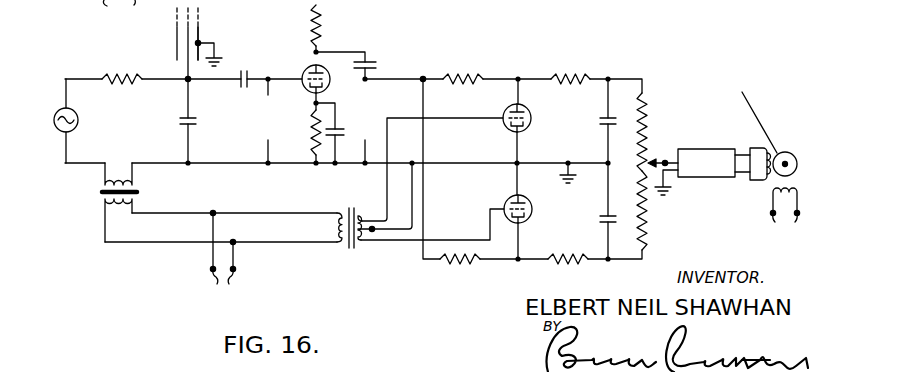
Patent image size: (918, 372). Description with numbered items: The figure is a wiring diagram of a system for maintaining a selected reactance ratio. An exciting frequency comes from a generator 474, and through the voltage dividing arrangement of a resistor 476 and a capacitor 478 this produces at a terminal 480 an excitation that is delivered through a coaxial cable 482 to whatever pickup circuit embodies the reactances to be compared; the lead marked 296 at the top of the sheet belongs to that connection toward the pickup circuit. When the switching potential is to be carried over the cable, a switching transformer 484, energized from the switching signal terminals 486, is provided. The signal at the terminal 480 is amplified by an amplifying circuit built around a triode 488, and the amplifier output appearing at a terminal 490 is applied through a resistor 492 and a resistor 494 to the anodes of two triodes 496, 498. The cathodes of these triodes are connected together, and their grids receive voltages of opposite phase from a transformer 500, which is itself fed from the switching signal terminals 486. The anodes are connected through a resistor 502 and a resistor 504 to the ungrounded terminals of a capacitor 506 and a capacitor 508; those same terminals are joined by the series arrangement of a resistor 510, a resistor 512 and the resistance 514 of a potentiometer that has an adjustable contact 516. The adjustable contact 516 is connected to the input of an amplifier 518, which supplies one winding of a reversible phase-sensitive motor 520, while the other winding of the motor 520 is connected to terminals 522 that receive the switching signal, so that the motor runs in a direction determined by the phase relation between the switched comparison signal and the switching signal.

The connection to preceding circuit 296 is at (124, 13).
The generator 474 is at (57, 129).
The resistor 476 is at (128, 72).
The capacitor 478 is at (197, 124).
The terminal 480 is at (186, 83).
The coaxial cable 482 is at (200, 42).
The switching transformer 484 is at (98, 197).
The switching signal terminals 486 is at (228, 258).
The triode 488 is at (305, 70).
The terminal 490 is at (424, 77).
The resistor 492 is at (477, 73).
The resistor 494 is at (464, 265).
The triode 496 is at (505, 114).
The triode 498 is at (507, 201).
The transformer 500 is at (356, 247).
The resistor 502 is at (564, 73).
The resistor 504 is at (572, 265).
The capacitor 506 is at (600, 118).
The capacitor 508 is at (601, 222).
The resistor 510 is at (650, 107).
The resistor 512 is at (652, 233).
The potentiometer resistance 514 is at (654, 157).
The adjustable contact 516 is at (672, 181).
The amplifier 518 is at (710, 149).
The reversible phase-sensitive motor 520 is at (794, 138).
The terminals 522 is at (790, 216).